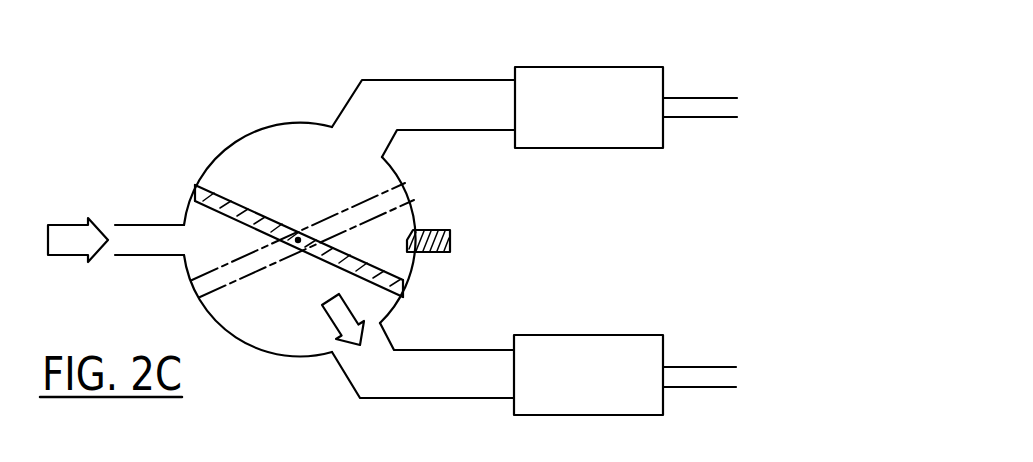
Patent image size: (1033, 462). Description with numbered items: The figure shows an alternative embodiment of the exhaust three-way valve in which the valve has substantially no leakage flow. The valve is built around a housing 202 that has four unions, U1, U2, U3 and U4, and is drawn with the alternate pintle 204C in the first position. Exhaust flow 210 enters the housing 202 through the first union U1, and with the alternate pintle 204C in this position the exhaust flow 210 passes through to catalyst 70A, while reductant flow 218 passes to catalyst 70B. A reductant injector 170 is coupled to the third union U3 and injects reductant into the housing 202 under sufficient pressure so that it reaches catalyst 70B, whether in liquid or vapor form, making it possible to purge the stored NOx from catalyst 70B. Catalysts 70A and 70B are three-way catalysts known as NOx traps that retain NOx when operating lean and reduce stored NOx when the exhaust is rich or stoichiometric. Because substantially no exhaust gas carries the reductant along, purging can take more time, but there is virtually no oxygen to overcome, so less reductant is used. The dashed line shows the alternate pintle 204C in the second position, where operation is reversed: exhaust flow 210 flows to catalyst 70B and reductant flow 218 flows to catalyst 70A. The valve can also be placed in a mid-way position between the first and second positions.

The housing 202 is at (215, 322).
The alternate pintle 204C is at (220, 188).
The reductant flow 218 is at (375, 222).
The reductant injector 170 is at (443, 252).
The exhaust flow 210 is at (92, 220).
The catalyst 70A is at (572, 335).
The catalyst 70B is at (555, 67).
The union U1 is at (182, 226).
The union U2 is at (343, 354).
The union U3 is at (407, 228).
The union U4 is at (337, 130).